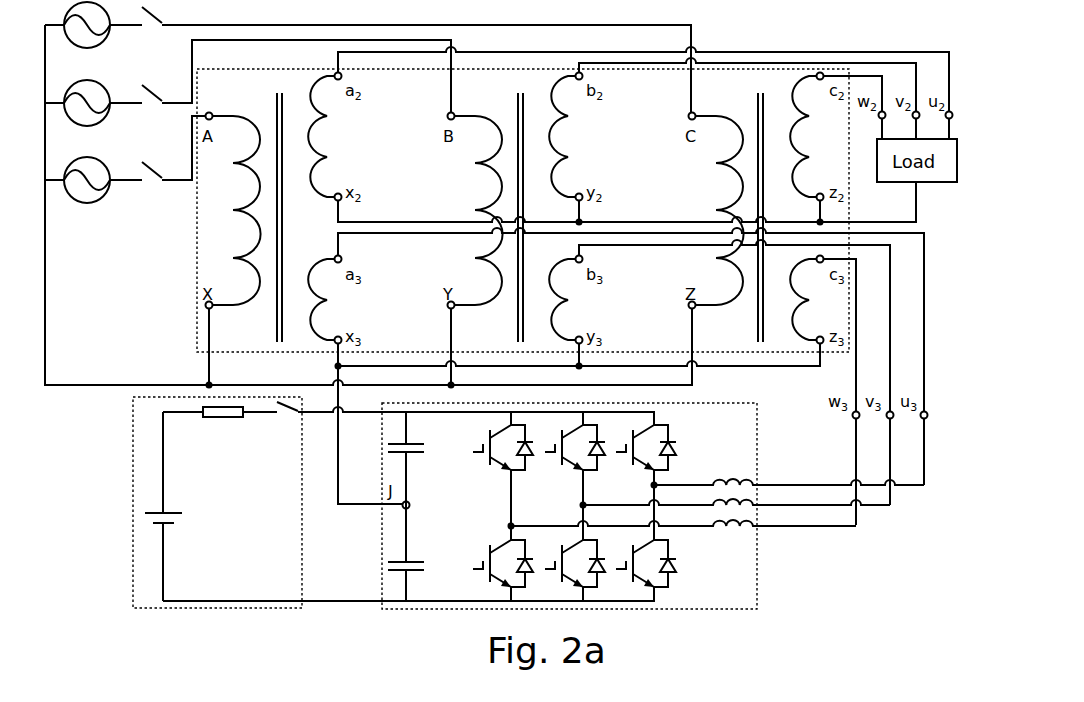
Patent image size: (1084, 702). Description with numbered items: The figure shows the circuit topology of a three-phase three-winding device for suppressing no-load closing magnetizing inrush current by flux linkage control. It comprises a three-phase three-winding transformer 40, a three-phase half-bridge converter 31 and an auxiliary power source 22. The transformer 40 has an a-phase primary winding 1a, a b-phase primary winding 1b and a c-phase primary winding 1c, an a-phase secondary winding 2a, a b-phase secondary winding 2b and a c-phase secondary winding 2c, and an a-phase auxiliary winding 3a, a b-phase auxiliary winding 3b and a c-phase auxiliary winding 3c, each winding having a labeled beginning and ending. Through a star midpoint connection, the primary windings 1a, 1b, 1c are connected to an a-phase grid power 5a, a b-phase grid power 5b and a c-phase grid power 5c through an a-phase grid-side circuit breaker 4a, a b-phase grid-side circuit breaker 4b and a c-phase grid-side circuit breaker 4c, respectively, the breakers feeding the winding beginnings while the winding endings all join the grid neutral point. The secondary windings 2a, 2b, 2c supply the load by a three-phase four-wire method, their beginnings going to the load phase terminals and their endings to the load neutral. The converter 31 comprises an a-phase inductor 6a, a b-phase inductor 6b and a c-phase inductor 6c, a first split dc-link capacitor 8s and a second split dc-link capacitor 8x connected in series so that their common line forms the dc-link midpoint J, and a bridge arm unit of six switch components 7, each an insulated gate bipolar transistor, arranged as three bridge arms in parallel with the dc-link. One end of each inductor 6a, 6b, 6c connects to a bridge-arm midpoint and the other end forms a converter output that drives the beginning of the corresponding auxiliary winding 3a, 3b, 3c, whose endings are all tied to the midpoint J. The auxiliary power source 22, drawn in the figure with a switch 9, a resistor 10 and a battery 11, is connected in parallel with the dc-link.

The a-phase primary winding 1a is at (230, 210).
The b-phase primary winding 1b is at (471, 210).
The c-phase primary winding 1c is at (713, 210).
The a-phase secondary winding 2a is at (326, 136).
The b-phase secondary winding 2b is at (569, 136).
The c-phase secondary winding 2c is at (809, 136).
The a-phase auxiliary winding 3a is at (326, 299).
The b-phase auxiliary winding 3b is at (569, 299).
The c-phase auxiliary winding 3c is at (809, 299).
The a-phase grid-side circuit breaker 4a is at (173, 160).
The b-phase grid-side circuit breaker 4b is at (294, 83).
The c-phase grid-side circuit breaker 4c is at (414, 61).
The a-phase grid power 5a is at (103, 191).
The b-phase grid power 5b is at (103, 114).
The c-phase grid power 5c is at (93, 36).
The a-phase inductor 6a is at (789, 477).
The b-phase inductor 6b is at (736, 497).
The c-phase inductor 6c is at (683, 517).
The switch component 7 is at (579, 506).
The first split dc-link capacitor 8s is at (420, 458).
The second split dc-link capacitor 8x is at (420, 553).
The battery switch 9 is at (466, 421).
The resistor 10 is at (220, 426).
The battery 11 is at (160, 506).
The auxiliary power source 22 is at (365, 502).
The three-phase half-bridge converter 31 is at (763, 398).
The three-phase three-winding transformer 40 is at (188, 293).